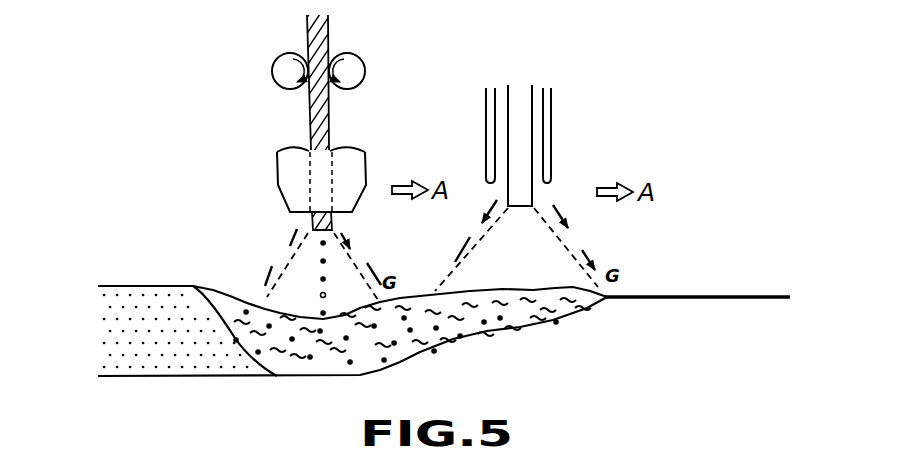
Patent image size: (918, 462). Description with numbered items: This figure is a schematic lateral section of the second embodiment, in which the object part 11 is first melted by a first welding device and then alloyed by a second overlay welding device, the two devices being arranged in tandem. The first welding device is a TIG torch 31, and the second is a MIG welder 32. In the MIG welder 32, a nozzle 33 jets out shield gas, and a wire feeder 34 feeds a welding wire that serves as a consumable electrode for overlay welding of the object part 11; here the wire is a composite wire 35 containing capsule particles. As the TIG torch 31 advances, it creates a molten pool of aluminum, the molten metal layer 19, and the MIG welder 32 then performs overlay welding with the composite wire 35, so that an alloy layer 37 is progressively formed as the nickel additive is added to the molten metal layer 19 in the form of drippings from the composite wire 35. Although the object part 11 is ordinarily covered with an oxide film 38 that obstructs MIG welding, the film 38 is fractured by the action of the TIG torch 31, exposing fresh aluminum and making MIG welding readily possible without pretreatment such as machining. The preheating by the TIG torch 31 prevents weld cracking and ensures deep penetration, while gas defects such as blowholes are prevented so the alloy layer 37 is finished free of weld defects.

The object part 11 is at (733, 280).
The molten metal layer 19 is at (488, 286).
The TIG torch 31 is at (552, 120).
The MIG welder 32 is at (345, 120).
The nozzle 33 is at (278, 171).
The wire feeder 34 is at (276, 72).
The composite wire 35 is at (329, 37).
The alloy layer 37 is at (147, 283).
The oxide film 38 is at (657, 292).